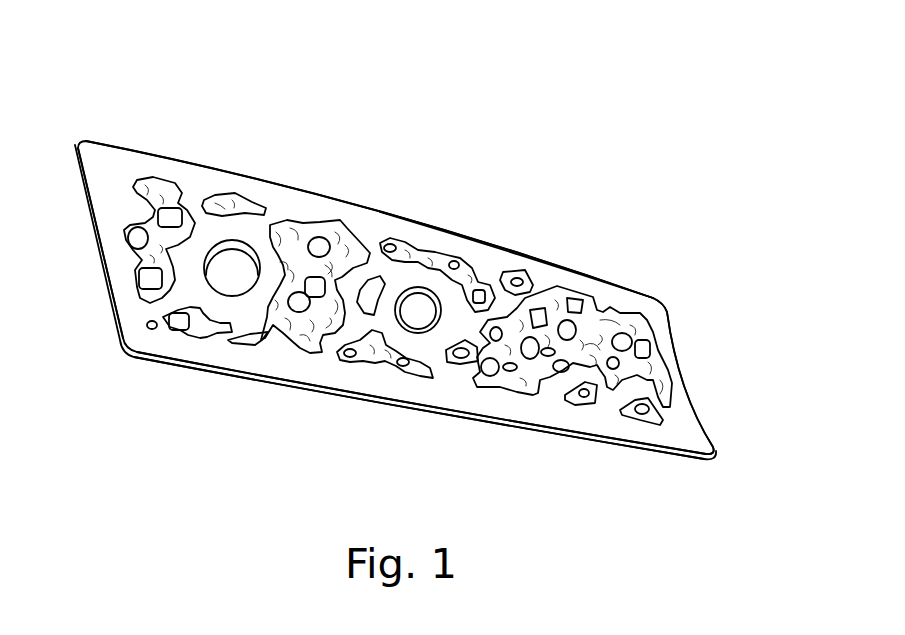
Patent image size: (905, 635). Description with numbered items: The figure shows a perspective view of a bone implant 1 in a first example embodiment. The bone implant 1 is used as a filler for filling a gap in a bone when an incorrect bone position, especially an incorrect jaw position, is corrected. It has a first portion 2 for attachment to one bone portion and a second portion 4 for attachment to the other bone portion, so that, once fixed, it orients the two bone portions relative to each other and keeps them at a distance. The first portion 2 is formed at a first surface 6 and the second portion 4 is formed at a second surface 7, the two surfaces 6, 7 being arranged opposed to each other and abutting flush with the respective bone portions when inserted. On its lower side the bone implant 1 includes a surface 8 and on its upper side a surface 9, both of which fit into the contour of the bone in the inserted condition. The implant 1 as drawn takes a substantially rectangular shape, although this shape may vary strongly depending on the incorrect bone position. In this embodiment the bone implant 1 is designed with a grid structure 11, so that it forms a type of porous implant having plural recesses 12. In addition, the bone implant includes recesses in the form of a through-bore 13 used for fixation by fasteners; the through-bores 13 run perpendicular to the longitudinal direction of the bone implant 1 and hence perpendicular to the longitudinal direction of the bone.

The bone implant 1 is at (92, 122).
The first portion 2 is at (302, 394).
The second portion 4 is at (382, 209).
The first surface 6 is at (370, 406).
The second surface 7 is at (523, 238).
The surface on lower side 8 is at (692, 367).
The surface on upper side 9 is at (92, 241).
The grid structure 11 is at (594, 311).
The recesses 12 is at (291, 222).
The through-bore 13 is at (232, 268).